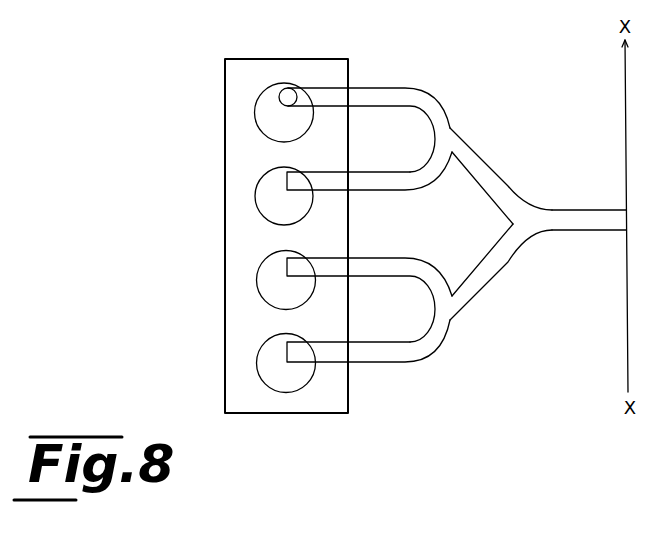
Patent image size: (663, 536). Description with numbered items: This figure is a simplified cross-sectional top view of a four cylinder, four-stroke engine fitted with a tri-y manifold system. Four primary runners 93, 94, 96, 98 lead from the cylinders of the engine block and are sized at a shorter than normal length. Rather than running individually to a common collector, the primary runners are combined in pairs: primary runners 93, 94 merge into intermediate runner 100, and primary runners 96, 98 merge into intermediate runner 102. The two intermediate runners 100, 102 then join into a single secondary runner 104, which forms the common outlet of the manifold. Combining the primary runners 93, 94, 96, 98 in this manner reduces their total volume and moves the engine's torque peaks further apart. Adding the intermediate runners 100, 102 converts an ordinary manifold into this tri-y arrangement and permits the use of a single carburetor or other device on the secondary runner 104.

The primary runner 93 is at (408, 87).
The primary runner 94 is at (395, 172).
The primary runner 96 is at (410, 258).
The primary runner 98 is at (395, 342).
The intermediate runner 100 is at (509, 188).
The intermediate runner 102 is at (512, 259).
The secondary runner 104 is at (590, 210).